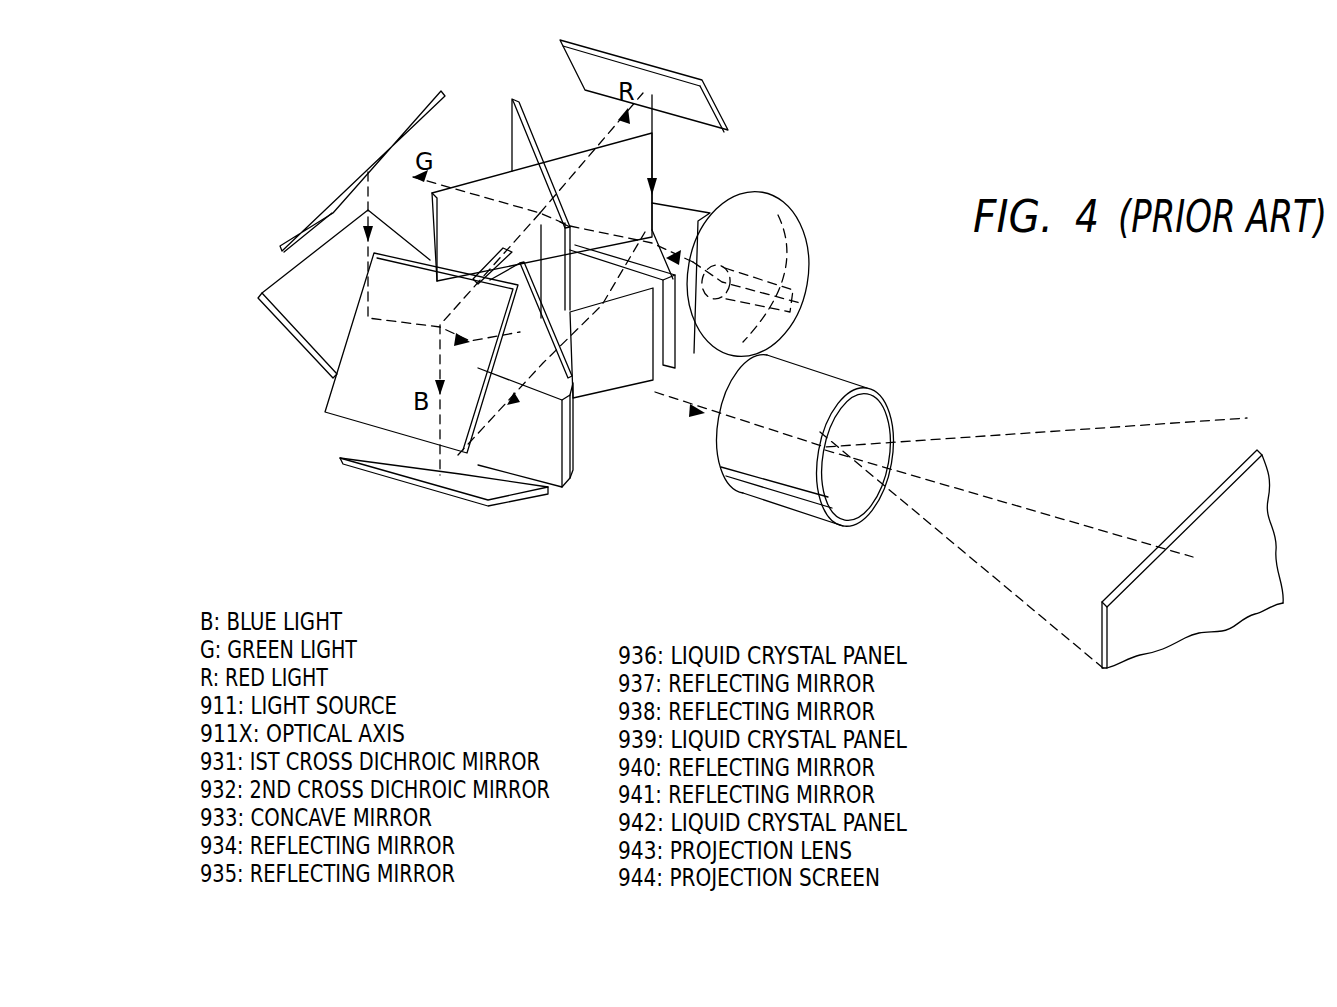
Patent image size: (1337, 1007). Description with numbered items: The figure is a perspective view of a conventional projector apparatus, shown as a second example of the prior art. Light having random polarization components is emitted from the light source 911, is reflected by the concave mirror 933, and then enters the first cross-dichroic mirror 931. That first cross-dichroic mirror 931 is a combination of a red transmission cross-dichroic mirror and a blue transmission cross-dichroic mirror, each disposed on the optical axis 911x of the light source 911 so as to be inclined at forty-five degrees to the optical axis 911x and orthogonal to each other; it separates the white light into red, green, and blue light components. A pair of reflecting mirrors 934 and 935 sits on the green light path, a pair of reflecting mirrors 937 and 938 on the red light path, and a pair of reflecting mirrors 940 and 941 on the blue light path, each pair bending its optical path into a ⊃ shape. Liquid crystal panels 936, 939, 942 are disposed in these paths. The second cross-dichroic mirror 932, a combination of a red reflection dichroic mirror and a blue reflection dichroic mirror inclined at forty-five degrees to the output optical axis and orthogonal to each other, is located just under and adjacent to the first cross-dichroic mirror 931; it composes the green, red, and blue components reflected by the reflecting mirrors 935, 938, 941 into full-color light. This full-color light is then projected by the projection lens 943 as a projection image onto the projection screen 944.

The light source 911 is at (798, 291).
The optical axis 911x is at (800, 303).
The first cross-dichroic mirror 931 is at (521, 110).
The second cross-dichroic mirror 932 is at (596, 392).
The concave mirror 933 is at (797, 260).
The reflecting mirror 934 is at (411, 121).
The reflecting mirror 935 is at (283, 293).
The liquid crystal panel 936 is at (493, 280).
The reflecting mirror 937 is at (700, 102).
The reflecting mirror 938 is at (694, 220).
The liquid crystal panel 939 is at (700, 243).
The reflecting mirror 940 is at (342, 400).
The reflecting mirror 941 is at (402, 478).
The liquid crystal panel 942 is at (553, 480).
The projection lens 943 is at (800, 498).
The projection screen 944 is at (1107, 628).